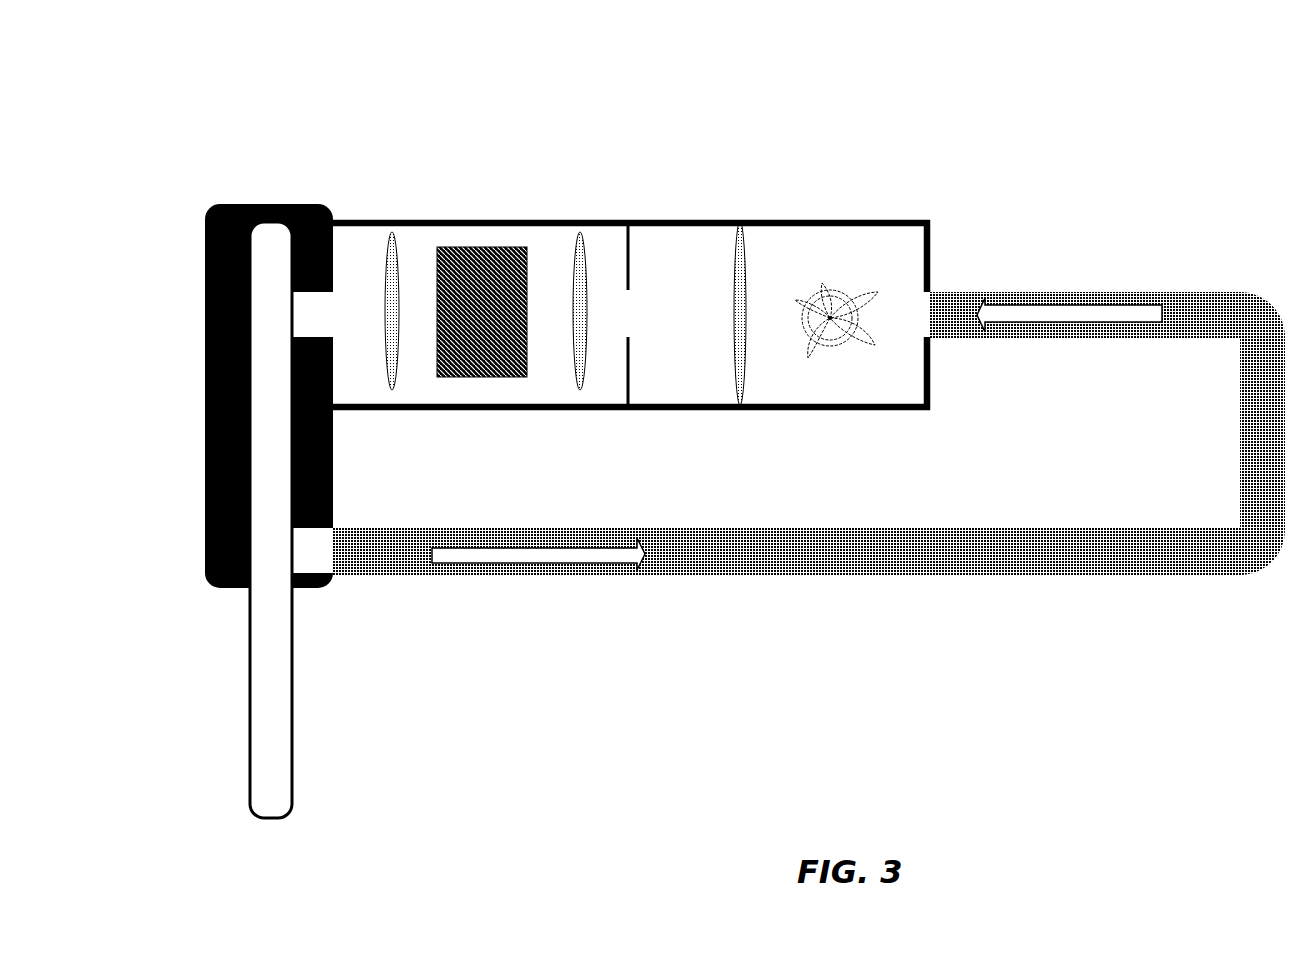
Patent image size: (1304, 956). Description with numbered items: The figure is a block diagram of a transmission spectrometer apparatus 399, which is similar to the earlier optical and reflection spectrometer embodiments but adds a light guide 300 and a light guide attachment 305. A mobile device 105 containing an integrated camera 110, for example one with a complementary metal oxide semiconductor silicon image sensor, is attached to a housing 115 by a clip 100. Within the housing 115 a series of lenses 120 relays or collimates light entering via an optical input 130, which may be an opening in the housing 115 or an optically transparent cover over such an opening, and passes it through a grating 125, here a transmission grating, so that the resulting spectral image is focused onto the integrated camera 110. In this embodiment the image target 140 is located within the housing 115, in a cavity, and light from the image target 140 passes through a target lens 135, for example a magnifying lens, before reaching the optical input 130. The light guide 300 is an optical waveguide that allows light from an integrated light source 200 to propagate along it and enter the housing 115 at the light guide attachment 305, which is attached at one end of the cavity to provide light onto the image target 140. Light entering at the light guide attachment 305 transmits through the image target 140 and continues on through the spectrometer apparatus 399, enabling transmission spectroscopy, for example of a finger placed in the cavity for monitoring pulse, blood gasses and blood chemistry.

The clip 100 is at (223, 204).
The mobile device 105 is at (247, 680).
The integrated camera 110 is at (303, 307).
The housing 115 is at (440, 220).
The lenses 120 is at (570, 365).
The grating 125 is at (466, 247).
The optical input 130 is at (628, 313).
The target lens 135 is at (746, 298).
The image target 140 is at (853, 283).
The integrated light source 200 is at (324, 575).
The light guide 300 is at (805, 526).
The light guide attachment 305 is at (932, 294).
The spectrometer apparatus 399 is at (1142, 74).